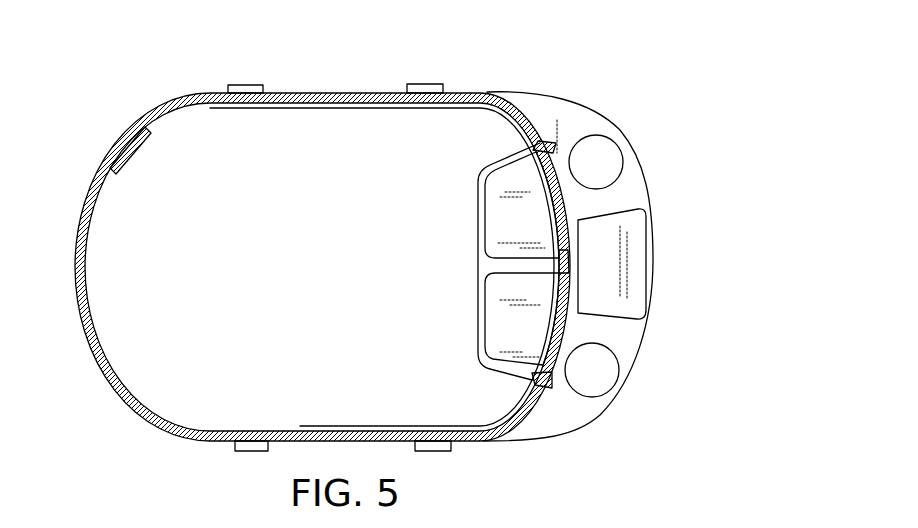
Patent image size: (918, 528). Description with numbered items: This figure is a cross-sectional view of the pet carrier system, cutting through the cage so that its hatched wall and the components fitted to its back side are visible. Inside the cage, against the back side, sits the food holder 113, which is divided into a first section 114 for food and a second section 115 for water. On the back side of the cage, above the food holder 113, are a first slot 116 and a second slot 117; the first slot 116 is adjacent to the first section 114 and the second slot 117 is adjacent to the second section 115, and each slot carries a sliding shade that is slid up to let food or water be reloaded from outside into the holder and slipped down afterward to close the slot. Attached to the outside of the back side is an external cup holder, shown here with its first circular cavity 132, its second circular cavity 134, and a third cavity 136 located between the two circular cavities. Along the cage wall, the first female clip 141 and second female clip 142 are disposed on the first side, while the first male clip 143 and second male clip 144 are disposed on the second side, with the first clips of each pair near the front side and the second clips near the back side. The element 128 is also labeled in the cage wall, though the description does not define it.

The food holder 113 is at (480, 270).
The first section 114 is at (503, 210).
The second section 115 is at (497, 333).
The first slot 116 is at (567, 203).
The second slot 117 is at (563, 317).
The pad 128 is at (127, 152).
The first circular cavity 132 is at (603, 158).
The second circular cavity 134 is at (604, 375).
The third cavity 136 is at (625, 280).
The first female clip 141 is at (236, 446).
The second female clip 142 is at (440, 447).
The first male clip 143 is at (228, 88).
The second male clip 144 is at (421, 86).